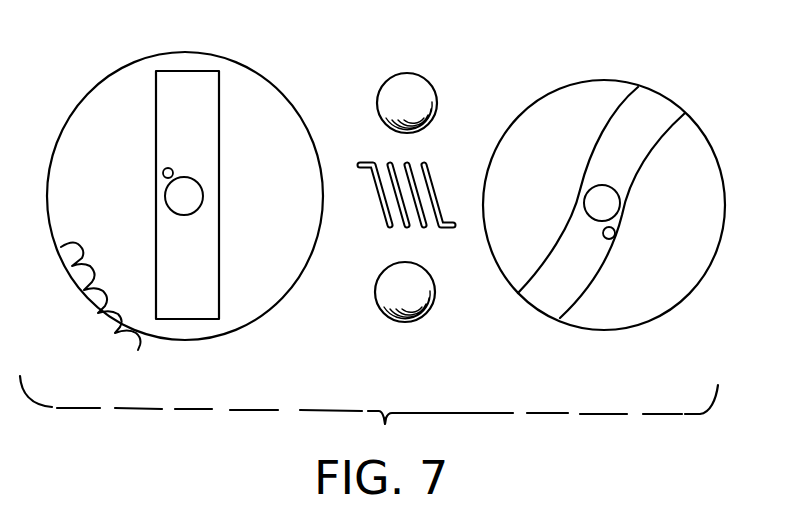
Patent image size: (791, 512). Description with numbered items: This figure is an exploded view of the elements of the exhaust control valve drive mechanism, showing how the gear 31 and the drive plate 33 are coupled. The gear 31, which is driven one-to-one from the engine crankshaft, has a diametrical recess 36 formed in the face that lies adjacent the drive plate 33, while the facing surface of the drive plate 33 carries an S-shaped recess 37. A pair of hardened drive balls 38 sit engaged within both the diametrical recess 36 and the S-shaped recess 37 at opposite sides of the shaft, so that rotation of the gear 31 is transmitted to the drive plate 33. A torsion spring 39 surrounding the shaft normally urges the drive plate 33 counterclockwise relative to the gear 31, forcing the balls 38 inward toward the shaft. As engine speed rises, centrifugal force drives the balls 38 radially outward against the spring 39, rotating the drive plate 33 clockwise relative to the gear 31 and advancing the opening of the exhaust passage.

The gear 31 is at (290, 148).
The drive plate 33 is at (703, 165).
The diametrical recess 36 is at (197, 72).
The S-shaped recess 37 is at (547, 298).
The drive balls 38 is at (475, 47).
The torsion spring 39 is at (438, 198).